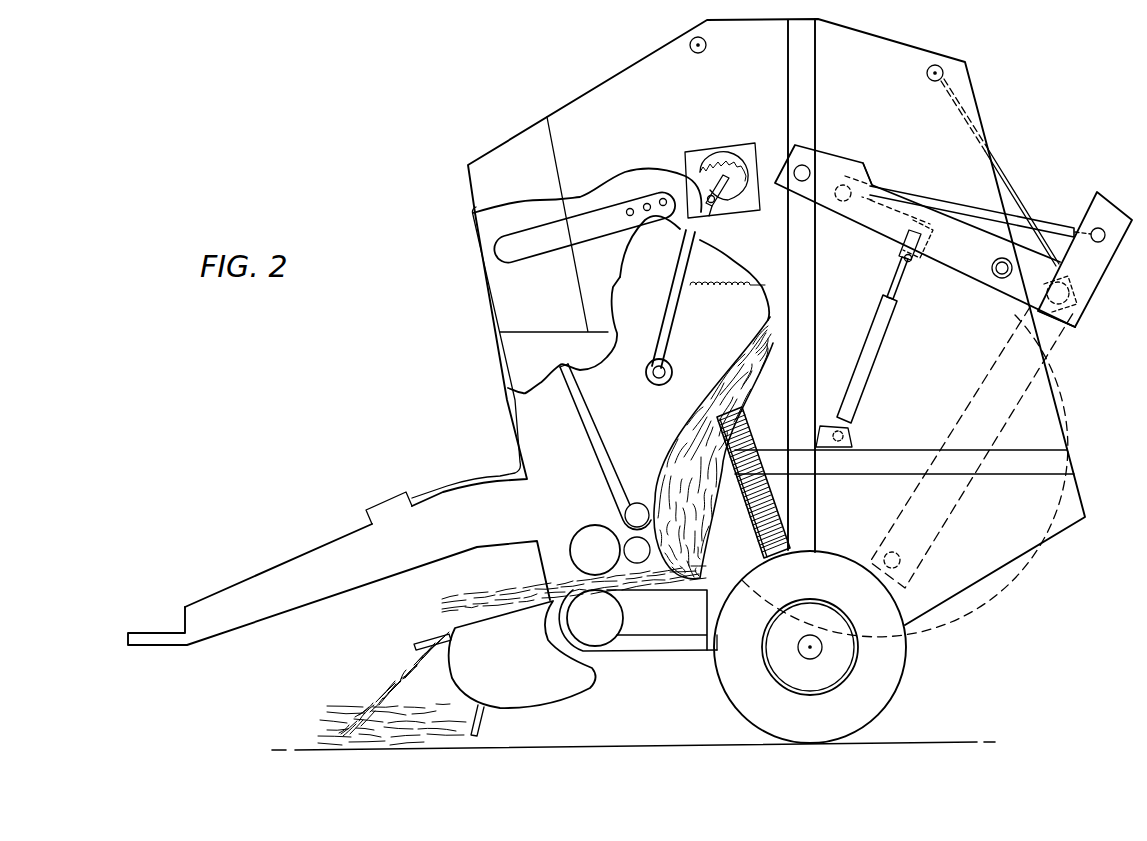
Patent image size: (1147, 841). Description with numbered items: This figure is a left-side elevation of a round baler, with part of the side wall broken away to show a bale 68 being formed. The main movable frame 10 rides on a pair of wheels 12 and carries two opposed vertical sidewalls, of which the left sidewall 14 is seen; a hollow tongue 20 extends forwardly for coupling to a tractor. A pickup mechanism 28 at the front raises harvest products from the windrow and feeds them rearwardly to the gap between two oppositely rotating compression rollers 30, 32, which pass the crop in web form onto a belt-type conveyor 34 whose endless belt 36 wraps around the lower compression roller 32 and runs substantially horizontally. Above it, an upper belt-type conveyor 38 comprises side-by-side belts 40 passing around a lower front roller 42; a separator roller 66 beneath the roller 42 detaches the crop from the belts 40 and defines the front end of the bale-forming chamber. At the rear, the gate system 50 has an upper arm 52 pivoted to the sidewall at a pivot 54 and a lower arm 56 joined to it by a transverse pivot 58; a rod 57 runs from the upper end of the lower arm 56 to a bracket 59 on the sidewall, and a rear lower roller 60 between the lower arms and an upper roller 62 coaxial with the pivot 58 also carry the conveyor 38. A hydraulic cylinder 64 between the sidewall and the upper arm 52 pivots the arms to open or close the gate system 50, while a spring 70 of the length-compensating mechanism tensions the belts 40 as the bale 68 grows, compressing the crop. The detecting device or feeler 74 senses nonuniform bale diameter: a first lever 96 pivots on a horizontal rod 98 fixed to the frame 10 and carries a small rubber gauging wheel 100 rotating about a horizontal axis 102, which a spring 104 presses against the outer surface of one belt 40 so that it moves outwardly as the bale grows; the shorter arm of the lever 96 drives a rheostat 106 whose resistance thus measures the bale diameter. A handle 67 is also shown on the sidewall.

The main movable frame 10 is at (993, 105).
The wheels 12 is at (890, 668).
The left vertical sidewall 14 is at (628, 112).
The hollow tongue 20 is at (235, 603).
The pickup mechanism 28 is at (386, 670).
The upper compression roller 30 is at (581, 540).
The lower compression roller 32 is at (603, 636).
The belt-type conveyor 34 is at (657, 650).
The endless belt 36 is at (688, 636).
The upper belt-type conveyor 38 is at (578, 424).
The bands or belts 40 is at (597, 465).
The lower front roller 42 is at (635, 502).
The rear gate system 50 is at (1054, 217).
The upper arms 52 is at (948, 256).
The pivots 54 is at (813, 170).
The lower arms 56 is at (1063, 330).
The rods 57 is at (963, 204).
The transverse pivots 58 is at (1073, 298).
The brackets 59 is at (852, 165).
The rear lower roller 60 is at (900, 561).
The upper roller 62 is at (1088, 272).
The hydraulic cylinders 64 is at (893, 330).
The separator roller 66 is at (657, 620).
The handle 67 is at (547, 240).
The bale 68 is at (731, 337).
The springs 70 is at (747, 417).
The detecting device or feeler 74 is at (662, 311).
The first lever 96 is at (682, 267).
The horizontal rod 98 is at (712, 212).
The gauging wheel 100 is at (648, 384).
The horizontal axis 102 is at (648, 371).
The spring 104 is at (735, 268).
The rheostat 106 is at (727, 173).